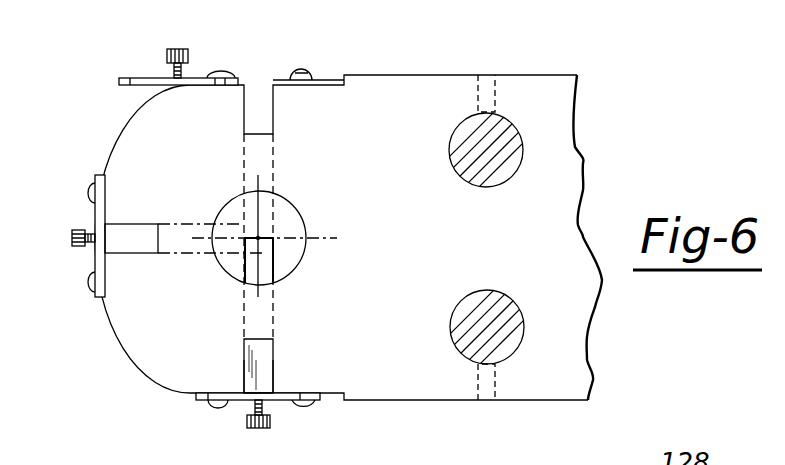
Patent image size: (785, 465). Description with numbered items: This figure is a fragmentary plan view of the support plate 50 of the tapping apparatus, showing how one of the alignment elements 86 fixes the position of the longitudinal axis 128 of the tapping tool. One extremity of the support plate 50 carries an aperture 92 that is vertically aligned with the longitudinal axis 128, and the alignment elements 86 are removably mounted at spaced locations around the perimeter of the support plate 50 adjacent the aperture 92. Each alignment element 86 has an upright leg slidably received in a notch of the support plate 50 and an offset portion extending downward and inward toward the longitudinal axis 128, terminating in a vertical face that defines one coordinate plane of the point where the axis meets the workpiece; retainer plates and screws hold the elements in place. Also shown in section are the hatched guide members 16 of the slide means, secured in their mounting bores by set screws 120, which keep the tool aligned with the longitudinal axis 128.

The guide rods 16 is at (483, 300).
The support plate 50 is at (562, 163).
The alignment element 86 is at (248, 377).
The aperture 92 is at (297, 257).
The set screws 120 is at (507, 73).
The longitudinal axis 128 is at (258, 238).